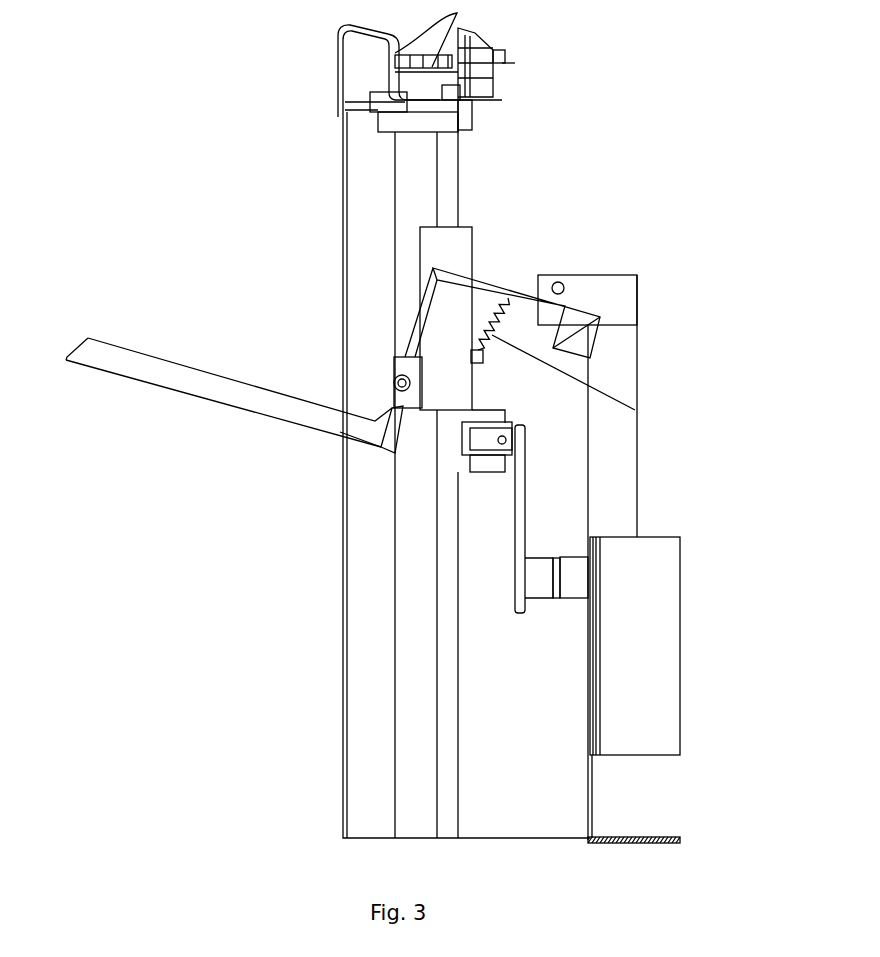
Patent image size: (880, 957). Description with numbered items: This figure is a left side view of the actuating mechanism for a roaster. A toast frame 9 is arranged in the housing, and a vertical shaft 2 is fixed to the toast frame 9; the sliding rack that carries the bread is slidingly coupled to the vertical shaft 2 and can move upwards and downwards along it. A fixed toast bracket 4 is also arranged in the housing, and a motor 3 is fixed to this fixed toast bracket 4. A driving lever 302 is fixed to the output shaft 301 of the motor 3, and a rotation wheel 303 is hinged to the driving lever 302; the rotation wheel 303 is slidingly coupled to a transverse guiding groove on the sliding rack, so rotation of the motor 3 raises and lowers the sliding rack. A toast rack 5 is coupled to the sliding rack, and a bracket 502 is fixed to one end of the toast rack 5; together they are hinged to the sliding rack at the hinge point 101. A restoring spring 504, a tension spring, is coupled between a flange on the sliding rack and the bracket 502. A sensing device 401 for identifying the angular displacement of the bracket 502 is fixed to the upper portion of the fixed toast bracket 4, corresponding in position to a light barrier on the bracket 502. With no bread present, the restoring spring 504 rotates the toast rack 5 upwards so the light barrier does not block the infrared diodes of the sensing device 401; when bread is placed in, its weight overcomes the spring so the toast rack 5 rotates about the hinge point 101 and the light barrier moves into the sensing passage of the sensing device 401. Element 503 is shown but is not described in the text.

The vertical shaft 2 is at (455, 203).
The motor 3 is at (640, 673).
The fixed toast bracket 4 is at (613, 497).
The toast rack 5 is at (168, 363).
The toast frame 9 is at (358, 735).
The hinge point 101 is at (375, 421).
The output shaft 301 is at (578, 582).
The driving lever 302 is at (520, 537).
The rotation wheel 303 is at (481, 445).
The sensing device 401 is at (560, 284).
The bracket 502 is at (492, 283).
The lever arm 503 is at (250, 405).
The restoring spring 504 is at (635, 410).